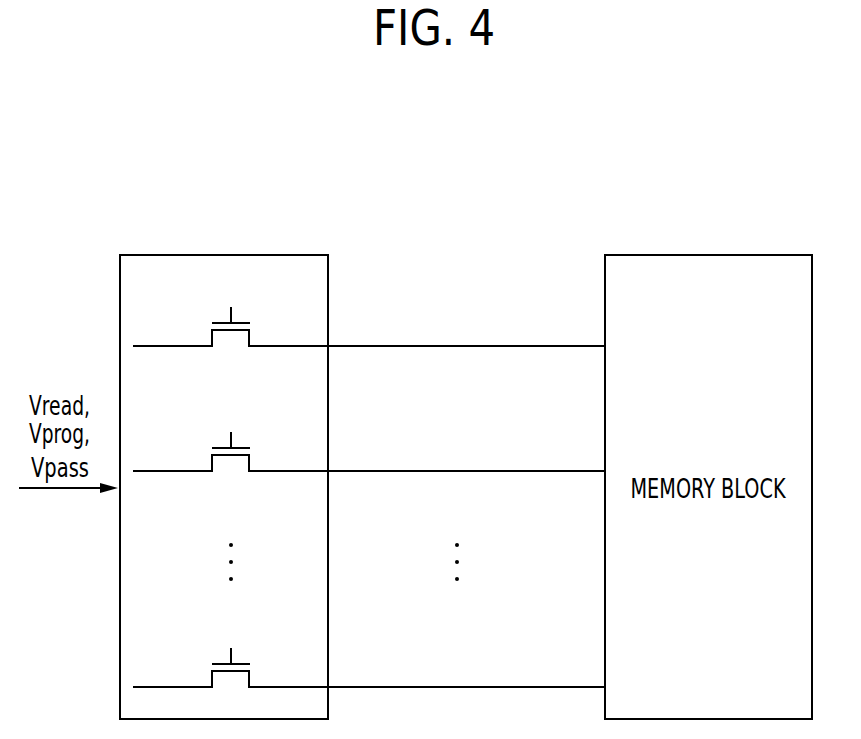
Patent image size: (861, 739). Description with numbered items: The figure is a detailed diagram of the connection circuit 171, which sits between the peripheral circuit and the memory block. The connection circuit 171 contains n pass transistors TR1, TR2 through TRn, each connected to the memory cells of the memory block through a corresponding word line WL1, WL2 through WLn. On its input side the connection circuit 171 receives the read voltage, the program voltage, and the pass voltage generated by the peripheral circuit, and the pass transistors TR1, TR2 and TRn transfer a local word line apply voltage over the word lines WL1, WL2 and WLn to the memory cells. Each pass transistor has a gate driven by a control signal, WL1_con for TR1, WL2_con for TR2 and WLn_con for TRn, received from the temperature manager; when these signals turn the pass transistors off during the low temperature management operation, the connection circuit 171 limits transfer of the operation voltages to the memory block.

The connection circuit 171 is at (224, 255).
The pass transistor TR1 is at (230, 326).
The pass transistor TR2 is at (230, 450).
The pass transistor TRn is at (230, 667).
The word line WL1 is at (466, 333).
The word line WL2 is at (466, 456).
The word line WLn is at (466, 673).